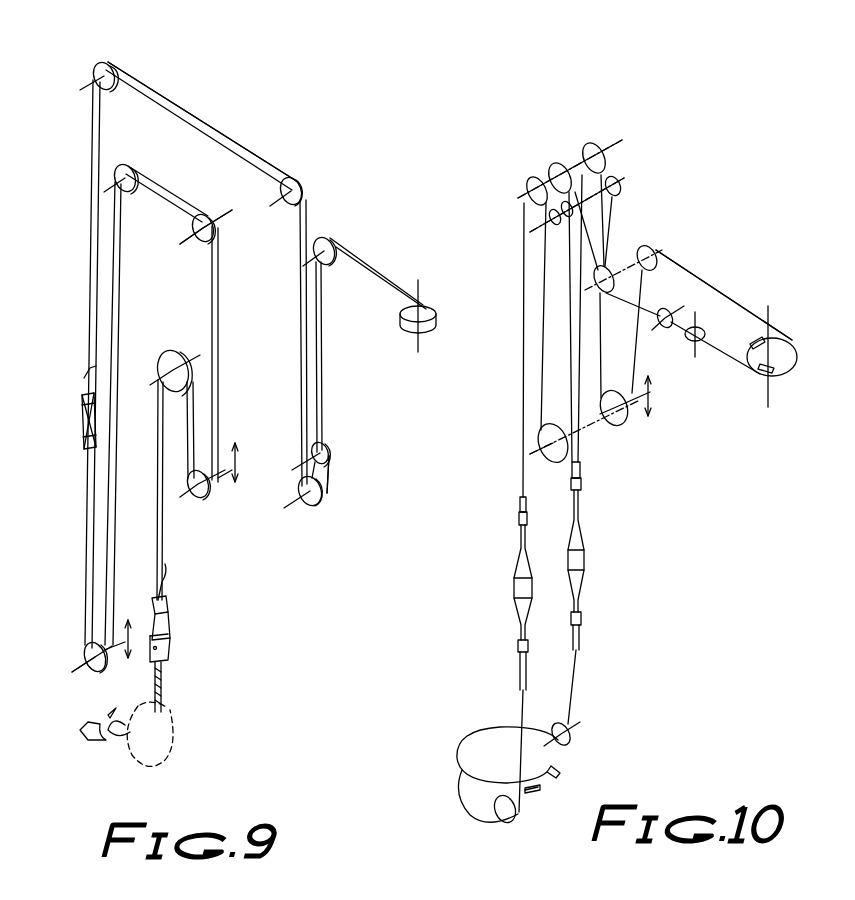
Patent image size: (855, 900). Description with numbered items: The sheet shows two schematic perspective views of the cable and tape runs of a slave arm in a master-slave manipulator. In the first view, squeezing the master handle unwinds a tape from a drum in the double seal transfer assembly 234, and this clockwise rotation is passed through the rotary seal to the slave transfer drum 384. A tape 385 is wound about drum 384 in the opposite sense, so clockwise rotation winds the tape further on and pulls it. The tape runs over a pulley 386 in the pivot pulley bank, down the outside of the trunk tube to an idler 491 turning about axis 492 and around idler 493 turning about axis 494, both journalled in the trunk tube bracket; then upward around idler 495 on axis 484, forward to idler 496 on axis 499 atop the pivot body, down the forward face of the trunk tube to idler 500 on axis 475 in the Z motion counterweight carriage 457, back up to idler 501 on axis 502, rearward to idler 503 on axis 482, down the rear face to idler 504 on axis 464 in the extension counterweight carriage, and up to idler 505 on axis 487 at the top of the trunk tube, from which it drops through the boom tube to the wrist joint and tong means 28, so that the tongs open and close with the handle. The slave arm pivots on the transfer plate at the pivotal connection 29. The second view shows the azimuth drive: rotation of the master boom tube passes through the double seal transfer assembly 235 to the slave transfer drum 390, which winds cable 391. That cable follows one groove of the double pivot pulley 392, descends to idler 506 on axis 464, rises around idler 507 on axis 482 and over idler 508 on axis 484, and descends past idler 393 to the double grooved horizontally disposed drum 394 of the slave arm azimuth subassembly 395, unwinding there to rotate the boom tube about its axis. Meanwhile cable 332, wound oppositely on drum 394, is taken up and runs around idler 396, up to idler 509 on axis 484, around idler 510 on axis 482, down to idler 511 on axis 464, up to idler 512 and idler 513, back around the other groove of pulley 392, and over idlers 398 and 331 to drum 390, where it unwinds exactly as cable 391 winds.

In FIG. 9, the wrist joint and tong means 28 is at (90, 738).
In FIG. 10, the pivotal connection 29 is at (668, 246).
In FIG. 9, the double seal transfer assembly 234 is at (420, 352).
In FIG. 10, the double seal transfer assembly 235 is at (770, 397).
In FIG. 10, the idler 331 is at (692, 341).
In FIG. 10, the cable 332 is at (522, 394).
In FIG. 9, the slave transfer drum 384 is at (421, 306).
In FIG. 9, the tape 385 is at (214, 120).
In FIG. 9, the pulley 386 is at (334, 263).
In FIG. 10, the slave transfer drum 390 is at (782, 348).
In FIG. 10, the cable 391 is at (702, 283).
In FIG. 10, the double pivot pulley 392 is at (609, 266).
In FIG. 10, the idler 393 is at (575, 740).
In FIG. 10, the double grooved horizontally disposed drum 394 is at (532, 726).
In FIG. 10, the slave arm azimuth subassembly 395 is at (465, 780).
In FIG. 10, the idler 396 is at (510, 814).
In FIG. 10, the idler 398 is at (665, 325).
In FIG. 9, the Z motion counterweight carriage 457 is at (78, 678).
In FIG. 9, the axis 464 is at (186, 498).
In FIG. 10, the axis 464 is at (652, 400).
In FIG. 9, the axis 475 is at (80, 668).
In FIG. 9, the axis 482 is at (190, 235).
In FIG. 10, the axis 482 is at (633, 178).
In FIG. 9, the axis 484 is at (327, 181).
In FIG. 10, the axis 484 is at (620, 147).
In FIG. 9, the axis 487 is at (156, 385).
In FIG. 9, the idler 491 is at (340, 452).
In FIG. 9, the axis 492 is at (331, 440).
In FIG. 9, the idler 493 is at (314, 508).
In FIG. 9, the axis 494 is at (343, 482).
In FIG. 9, the idler 495 is at (288, 200).
In FIG. 9, the idler 496 is at (108, 88).
In FIG. 9, the axis 499 is at (128, 58).
In FIG. 9, the idler 500 is at (96, 672).
In FIG. 9, the idler 501 is at (126, 192).
In FIG. 9, the axis 502 is at (158, 170).
In FIG. 9, the idler 503 is at (201, 246).
In FIG. 9, the idler 504 is at (206, 500).
In FIG. 9, the idler 505 is at (172, 352).
In FIG. 10, the idler 506 is at (620, 426).
In FIG. 10, the idler 507 is at (619, 190).
In FIG. 10, the idler 508 is at (593, 145).
In FIG. 10, the idler 509 is at (536, 178).
In FIG. 10, the idler 510 is at (552, 224).
In FIG. 10, the idler 511 is at (553, 462).
In FIG. 10, the idler 512 is at (568, 220).
In FIG. 10, the idler 513 is at (558, 162).